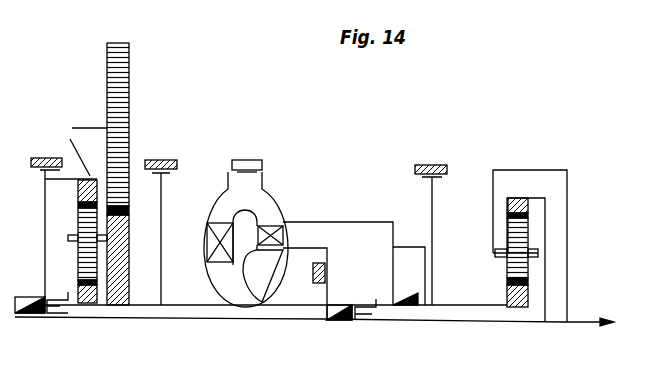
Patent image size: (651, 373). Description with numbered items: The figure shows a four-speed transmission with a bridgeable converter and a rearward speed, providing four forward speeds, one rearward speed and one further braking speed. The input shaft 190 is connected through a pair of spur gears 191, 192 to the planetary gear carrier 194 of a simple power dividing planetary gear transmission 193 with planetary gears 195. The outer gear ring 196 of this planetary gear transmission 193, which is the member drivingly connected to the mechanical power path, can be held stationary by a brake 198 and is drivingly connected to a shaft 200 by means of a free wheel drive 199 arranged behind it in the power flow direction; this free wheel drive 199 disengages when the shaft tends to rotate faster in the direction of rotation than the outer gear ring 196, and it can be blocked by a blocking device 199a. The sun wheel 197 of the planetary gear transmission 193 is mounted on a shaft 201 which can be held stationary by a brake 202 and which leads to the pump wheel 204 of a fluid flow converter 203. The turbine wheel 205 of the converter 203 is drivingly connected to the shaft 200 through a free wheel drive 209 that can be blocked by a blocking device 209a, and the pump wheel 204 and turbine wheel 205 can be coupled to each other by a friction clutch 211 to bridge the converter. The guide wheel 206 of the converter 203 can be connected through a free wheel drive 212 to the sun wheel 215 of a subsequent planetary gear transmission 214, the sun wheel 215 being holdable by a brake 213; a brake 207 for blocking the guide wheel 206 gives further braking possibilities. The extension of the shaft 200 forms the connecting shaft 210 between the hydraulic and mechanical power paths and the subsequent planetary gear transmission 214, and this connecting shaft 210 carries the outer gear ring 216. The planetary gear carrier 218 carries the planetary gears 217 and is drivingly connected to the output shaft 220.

The input shaft 190 is at (88, 129).
The spur gear 191 is at (128, 84).
The spur gear 192 is at (119, 305).
The power dividing planetary gear transmission 193 is at (92, 179).
The planetary gear carrier 194 is at (68, 238).
The planetary gears 195 is at (79, 268).
The outer gear ring 196 is at (79, 196).
The sun wheel 197 is at (88, 305).
The brake 198 is at (36, 168).
The free wheel drive 199 is at (37, 316).
The blocking device 199a is at (56, 318).
The shaft 200 is at (232, 319).
The shaft 201 is at (175, 305).
The brake 202 is at (162, 160).
The fluid flow converter 203 is at (273, 179).
The pump wheel 204 is at (257, 262).
The turbine wheel 205 is at (280, 230).
The guide wheel 206 is at (209, 237).
The brake 207 is at (245, 160).
The free wheel drive 209 is at (347, 322).
The blocking device 209a is at (372, 310).
The connecting shaft 210 is at (453, 322).
The friction clutch 211 is at (326, 273).
The free wheel drive 212 is at (409, 276).
The brake 213 is at (432, 164).
The subsequent planetary gear transmission 214 is at (532, 169).
The sun wheel 215 is at (515, 309).
The outer gear ring 216 is at (527, 206).
The planetary gears 217 is at (518, 242).
The planetary gear carrier 218 is at (495, 185).
The output shaft 220 is at (586, 324).